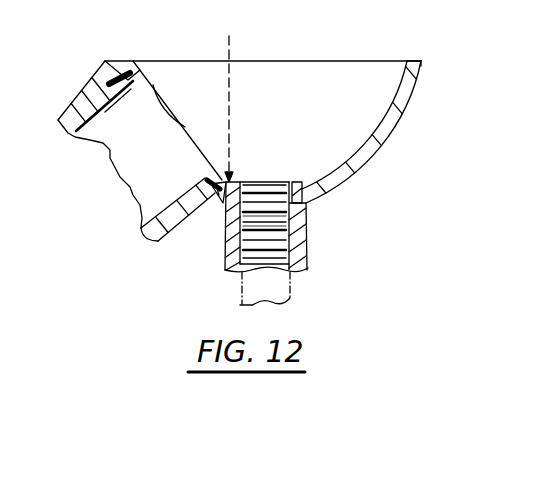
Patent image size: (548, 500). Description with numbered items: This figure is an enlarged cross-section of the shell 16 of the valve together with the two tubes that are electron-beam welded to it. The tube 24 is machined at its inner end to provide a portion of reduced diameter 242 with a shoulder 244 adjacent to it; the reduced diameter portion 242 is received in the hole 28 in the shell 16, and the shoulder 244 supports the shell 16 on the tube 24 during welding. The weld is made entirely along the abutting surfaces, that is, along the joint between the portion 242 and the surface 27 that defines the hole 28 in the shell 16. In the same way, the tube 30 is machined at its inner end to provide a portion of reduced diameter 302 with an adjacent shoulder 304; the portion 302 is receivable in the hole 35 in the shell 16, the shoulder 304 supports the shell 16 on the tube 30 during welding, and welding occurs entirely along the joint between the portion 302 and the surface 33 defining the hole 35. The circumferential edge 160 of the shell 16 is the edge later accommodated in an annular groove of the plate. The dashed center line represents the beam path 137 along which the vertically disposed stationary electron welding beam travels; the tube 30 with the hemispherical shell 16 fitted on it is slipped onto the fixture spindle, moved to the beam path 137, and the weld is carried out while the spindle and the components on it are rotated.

The shell 16 is at (403, 126).
The circumferential edge 160 is at (418, 61).
The beam path 137 is at (230, 38).
The tube 30 is at (308, 256).
The surface 33 is at (299, 182).
The hole 35 is at (280, 222).
The reduced diameter portion 302 is at (326, 178).
The shoulder 304 is at (213, 198).
The tube 24 is at (78, 100).
The shoulder 244 is at (103, 83).
The reduced diameter portion 242 is at (115, 67).
The surface 27 is at (133, 81).
The hole 28 is at (197, 126).